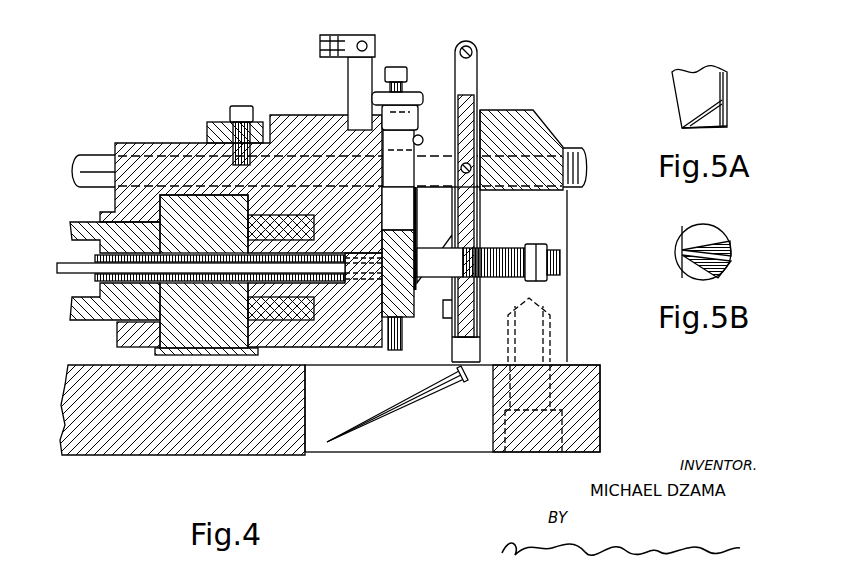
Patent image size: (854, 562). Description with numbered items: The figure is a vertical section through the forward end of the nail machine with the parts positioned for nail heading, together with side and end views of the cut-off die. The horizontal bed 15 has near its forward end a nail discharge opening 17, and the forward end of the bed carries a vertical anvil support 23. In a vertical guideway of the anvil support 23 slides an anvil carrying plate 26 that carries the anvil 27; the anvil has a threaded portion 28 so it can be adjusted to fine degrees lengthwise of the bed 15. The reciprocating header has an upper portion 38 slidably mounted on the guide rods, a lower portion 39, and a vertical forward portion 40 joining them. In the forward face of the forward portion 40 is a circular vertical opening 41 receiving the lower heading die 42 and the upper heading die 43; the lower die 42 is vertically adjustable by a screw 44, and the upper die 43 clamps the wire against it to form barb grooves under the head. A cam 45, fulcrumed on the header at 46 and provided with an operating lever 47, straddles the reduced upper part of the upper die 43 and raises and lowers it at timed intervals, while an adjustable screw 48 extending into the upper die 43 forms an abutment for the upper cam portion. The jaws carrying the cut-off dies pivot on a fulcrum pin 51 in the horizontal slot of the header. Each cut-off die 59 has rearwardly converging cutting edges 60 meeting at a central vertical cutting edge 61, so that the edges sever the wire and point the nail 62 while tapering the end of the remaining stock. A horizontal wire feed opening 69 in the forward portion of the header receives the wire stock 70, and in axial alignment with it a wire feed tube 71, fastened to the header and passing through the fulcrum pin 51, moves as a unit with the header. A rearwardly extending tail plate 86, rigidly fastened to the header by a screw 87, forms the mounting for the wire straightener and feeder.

In FIG. 4, the horizontal bed 15 is at (237, 440).
In FIG. 4, the nail discharge opening 17 is at (387, 443).
In FIG. 4, the vertical anvil support 23 is at (530, 130).
In FIG. 4, the anvil carrying plate 26 is at (485, 194).
In FIG. 4, the anvil 27 is at (432, 282).
In FIG. 4, the threaded portion 28 is at (506, 247).
In FIG. 4, the upper portion of header 38 is at (186, 142).
In FIG. 4, the lower portion of header 39 is at (322, 340).
In FIG. 4, the vertical forward portion of header 40 is at (353, 305).
In FIG. 4, the circular vertical opening 41 is at (142, 212).
In FIG. 4, the lower heading die 42 is at (398, 252).
In FIG. 4, the upper heading die 43 is at (398, 208).
In FIG. 4, the screw 44 is at (402, 341).
In FIG. 4, the cam 45 is at (397, 139).
In FIG. 4, the fulcrum 46 is at (450, 185).
In FIG. 4, the operating lever 47 is at (348, 68).
In FIG. 4, the adjustable screw 48 is at (396, 67).
In FIG. 4, the fulcrum pin 51 is at (192, 319).
In FIG. 5A, the cut-off die 59 is at (686, 88).
In FIG. 5A, the rearwardly converging cutting edges 60 is at (697, 121).
In FIG. 5B, the rearwardly converging cutting edges 60 is at (705, 243).
In FIG. 5A, the vertical cutting edge 61 is at (683, 127).
In FIG. 5B, the vertical cutting edge 61 is at (682, 252).
In FIG. 4, the nail 62 is at (400, 408).
In FIG. 4, the horizontal wire feed opening 69 is at (376, 278).
In FIG. 4, the wire stock 70 is at (363, 281).
In FIG. 4, the wire feed tube 71 is at (196, 250).
In FIG. 4, the tail plate 86 is at (217, 123).
In FIG. 4, the screw 87 is at (242, 106).